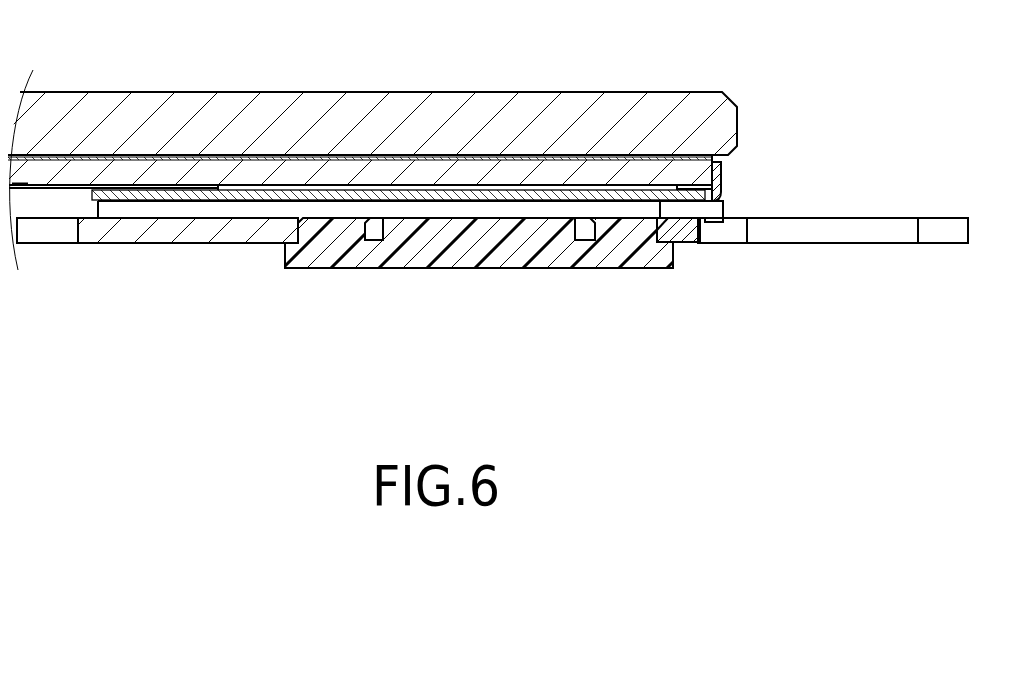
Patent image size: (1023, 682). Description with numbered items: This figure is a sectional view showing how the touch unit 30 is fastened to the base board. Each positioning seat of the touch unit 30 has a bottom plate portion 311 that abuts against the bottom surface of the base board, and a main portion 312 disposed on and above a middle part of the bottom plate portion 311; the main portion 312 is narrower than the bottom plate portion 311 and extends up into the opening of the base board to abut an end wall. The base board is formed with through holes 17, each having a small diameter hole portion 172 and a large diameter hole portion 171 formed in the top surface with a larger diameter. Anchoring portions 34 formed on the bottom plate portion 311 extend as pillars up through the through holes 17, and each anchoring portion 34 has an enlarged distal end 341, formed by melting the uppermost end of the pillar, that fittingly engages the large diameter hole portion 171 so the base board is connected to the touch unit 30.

The touch unit 30 is at (460, 268).
The bottom plate portion 311 is at (285, 257).
The main portion 312 is at (461, 224).
The anchoring portion 34 is at (332, 236).
The enlarged distal end 341 is at (370, 223).
The through hole 17 is at (660, 233).
The large diameter hole portion 171 is at (663, 232).
The small diameter hole portion 172 is at (593, 240).